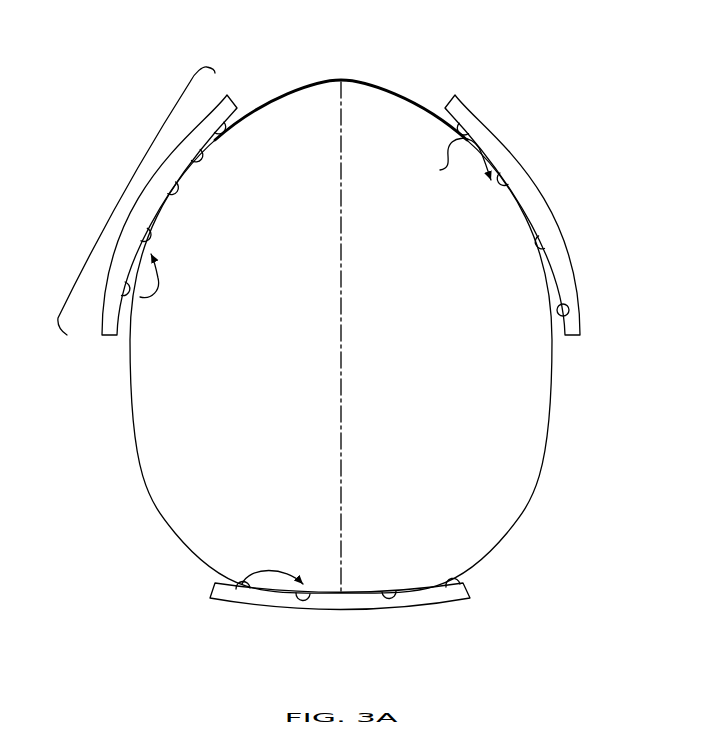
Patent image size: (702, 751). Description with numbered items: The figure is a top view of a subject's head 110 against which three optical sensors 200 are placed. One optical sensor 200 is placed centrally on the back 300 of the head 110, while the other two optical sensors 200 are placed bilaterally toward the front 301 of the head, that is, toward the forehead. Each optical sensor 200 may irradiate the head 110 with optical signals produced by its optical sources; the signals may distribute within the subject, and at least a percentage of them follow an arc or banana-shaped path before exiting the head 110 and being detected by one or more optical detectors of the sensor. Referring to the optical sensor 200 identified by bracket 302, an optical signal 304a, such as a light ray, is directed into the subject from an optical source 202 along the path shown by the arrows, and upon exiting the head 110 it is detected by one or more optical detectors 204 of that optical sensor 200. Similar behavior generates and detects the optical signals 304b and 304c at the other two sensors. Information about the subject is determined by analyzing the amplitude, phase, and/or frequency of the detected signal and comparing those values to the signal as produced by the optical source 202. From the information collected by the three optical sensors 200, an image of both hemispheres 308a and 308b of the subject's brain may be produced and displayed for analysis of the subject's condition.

The head 110 is at (331, 336).
The optical sensor 200 is at (105, 337).
The optical source 202 is at (178, 189).
The optical detector 204 is at (201, 157).
The back of the head 300 is at (343, 630).
The front of the head 301 is at (341, 76).
The bracket 302 is at (122, 197).
The optical signal 304a is at (160, 282).
The optical signal 304b is at (442, 163).
The optical signal 304c is at (280, 567).
The hemisphere of the brain 308a is at (236, 387).
The hemisphere of the brain 308b is at (386, 387).